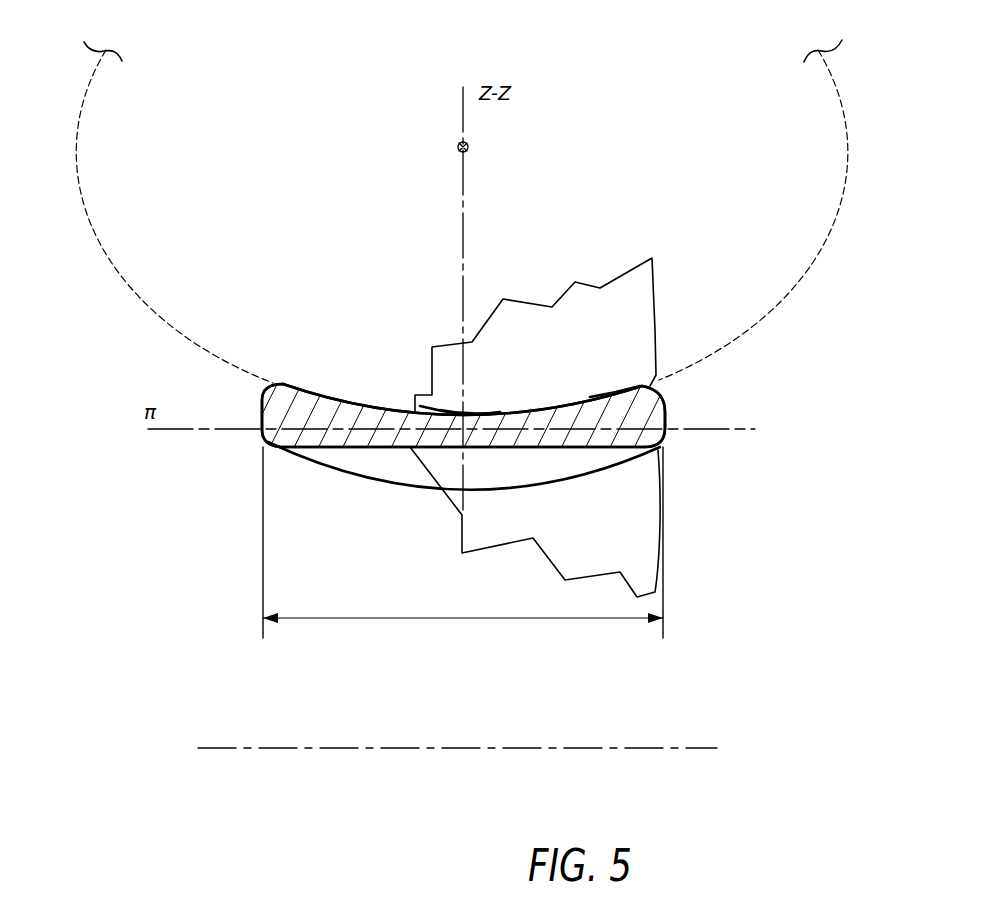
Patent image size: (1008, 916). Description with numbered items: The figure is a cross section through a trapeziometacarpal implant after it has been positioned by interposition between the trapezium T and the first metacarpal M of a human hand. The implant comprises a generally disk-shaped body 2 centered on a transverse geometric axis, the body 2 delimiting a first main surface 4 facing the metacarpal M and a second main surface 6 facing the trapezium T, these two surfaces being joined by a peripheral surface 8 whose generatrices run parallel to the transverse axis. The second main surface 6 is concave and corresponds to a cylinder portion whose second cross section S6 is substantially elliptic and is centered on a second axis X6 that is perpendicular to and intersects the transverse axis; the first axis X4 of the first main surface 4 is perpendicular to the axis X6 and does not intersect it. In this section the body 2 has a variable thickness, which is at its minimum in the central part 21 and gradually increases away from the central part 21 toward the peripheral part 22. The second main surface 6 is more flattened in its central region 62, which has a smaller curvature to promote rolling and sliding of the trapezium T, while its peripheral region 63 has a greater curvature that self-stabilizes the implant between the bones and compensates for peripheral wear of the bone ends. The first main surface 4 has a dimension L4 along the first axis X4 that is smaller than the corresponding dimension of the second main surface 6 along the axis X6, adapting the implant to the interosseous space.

The body 2 is at (290, 400).
The first main surface 4 is at (337, 462).
The second main surface 6 is at (337, 390).
The peripheral surface 8 is at (250, 405).
The central part 21 is at (476, 412).
The peripheral part 22 is at (647, 413).
The central region 62 is at (447, 398).
The peripheral region 63 is at (610, 390).
The trapezium T is at (640, 287).
The first metacarpal M is at (628, 535).
The second cross section S6 is at (122, 277).
The first axis X4 is at (196, 609).
The second axis X6 is at (458, 150).
The dimension of the first main surface L4 is at (463, 542).